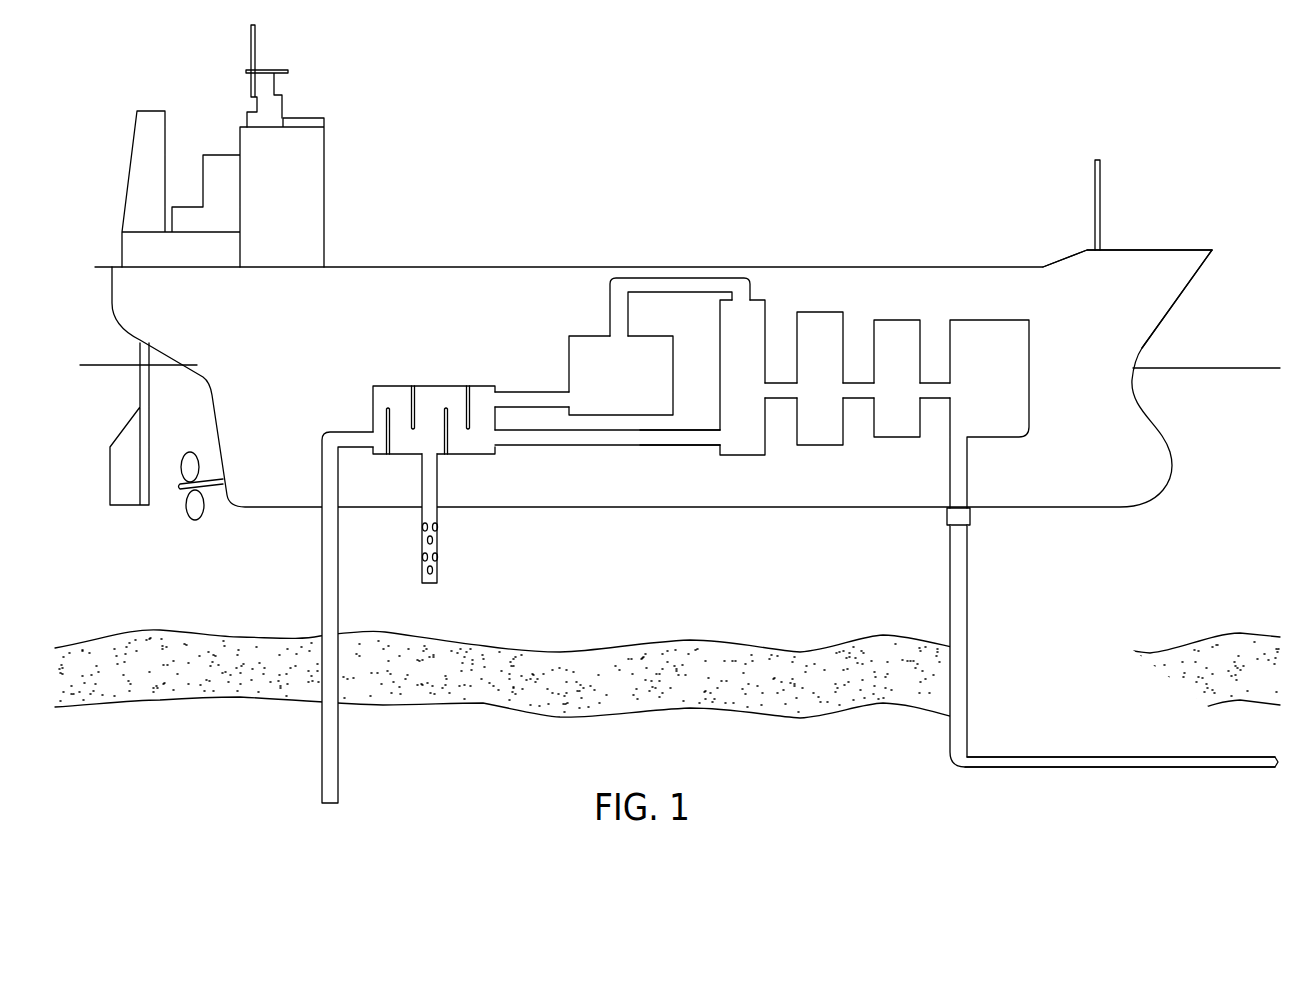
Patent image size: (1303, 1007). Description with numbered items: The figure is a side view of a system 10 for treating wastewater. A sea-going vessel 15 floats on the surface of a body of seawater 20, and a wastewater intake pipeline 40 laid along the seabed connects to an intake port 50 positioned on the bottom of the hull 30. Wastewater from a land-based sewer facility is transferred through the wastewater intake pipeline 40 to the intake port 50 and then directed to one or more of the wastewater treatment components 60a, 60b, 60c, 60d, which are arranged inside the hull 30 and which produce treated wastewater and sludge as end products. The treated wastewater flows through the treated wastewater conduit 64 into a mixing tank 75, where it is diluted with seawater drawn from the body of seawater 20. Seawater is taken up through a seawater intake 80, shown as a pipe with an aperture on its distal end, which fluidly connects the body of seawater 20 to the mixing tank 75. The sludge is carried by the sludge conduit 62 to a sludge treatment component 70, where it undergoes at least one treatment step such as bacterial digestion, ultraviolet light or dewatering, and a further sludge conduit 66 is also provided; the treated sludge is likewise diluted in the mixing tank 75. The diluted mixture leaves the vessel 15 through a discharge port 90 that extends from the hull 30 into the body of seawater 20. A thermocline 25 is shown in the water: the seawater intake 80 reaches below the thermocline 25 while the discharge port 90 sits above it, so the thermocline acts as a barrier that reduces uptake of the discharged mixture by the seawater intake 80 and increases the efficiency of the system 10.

The system 10 is at (855, 171).
The sea-going vessel 15 is at (1180, 236).
The body of SW 20 is at (1201, 534).
The thermocline 25 is at (218, 655).
The hull 30 is at (1135, 303).
The WW intake pipeline 40 is at (949, 757).
The intake port 50 is at (947, 518).
The WW treatment component 60a is at (990, 320).
The WW treatment component 60b is at (898, 320).
The WW treatment component 60c is at (820, 312).
The WW treatment component 60d is at (760, 300).
The sludge conduit 62 is at (682, 276).
The treated WW conduit 64 is at (693, 430).
The sludge conduit 66 is at (530, 392).
The sludge treatment component 70 is at (617, 416).
The mixing tank 75 is at (448, 386).
The SW intake 80 is at (323, 805).
The discharge port 90 is at (437, 527).